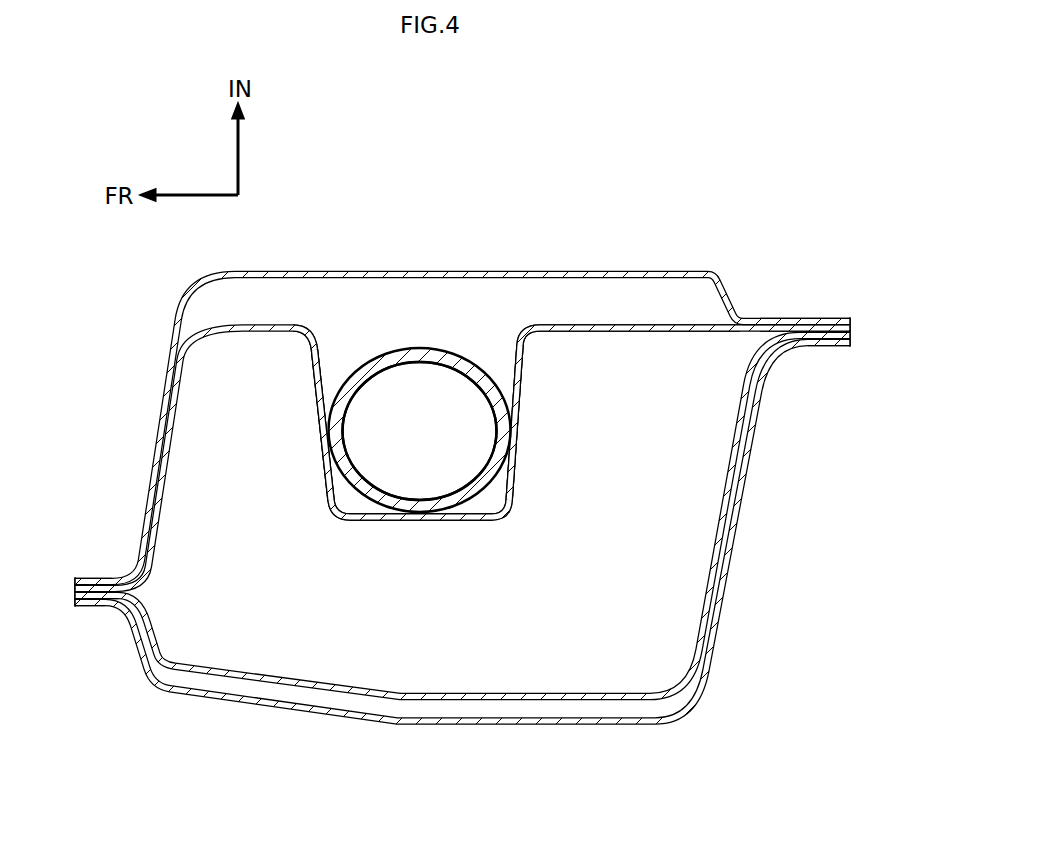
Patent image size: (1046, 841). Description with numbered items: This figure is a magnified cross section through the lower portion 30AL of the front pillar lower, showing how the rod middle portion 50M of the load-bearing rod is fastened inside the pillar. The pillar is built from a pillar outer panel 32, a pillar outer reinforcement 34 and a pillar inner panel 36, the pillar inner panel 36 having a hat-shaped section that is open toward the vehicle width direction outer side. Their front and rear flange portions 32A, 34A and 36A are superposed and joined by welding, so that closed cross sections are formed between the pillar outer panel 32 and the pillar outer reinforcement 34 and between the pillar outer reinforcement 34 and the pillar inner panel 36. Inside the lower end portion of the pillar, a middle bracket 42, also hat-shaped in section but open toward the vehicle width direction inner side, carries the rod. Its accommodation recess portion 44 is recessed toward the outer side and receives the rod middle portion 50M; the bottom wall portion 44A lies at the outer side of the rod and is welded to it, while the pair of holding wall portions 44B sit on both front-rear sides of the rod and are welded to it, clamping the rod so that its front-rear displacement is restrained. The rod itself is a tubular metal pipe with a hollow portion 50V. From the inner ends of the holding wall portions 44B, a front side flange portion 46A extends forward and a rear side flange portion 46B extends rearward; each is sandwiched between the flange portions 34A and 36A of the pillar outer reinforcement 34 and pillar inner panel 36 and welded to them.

The lower portion of the front pillar lower 30AL is at (786, 169).
The pillar outer panel 32 is at (569, 728).
The flange portion of the pillar outer panel 32A is at (110, 606).
The pillar outer reinforcement 34 is at (477, 706).
The flange portion of the pillar outer reinforcement 34A is at (83, 604).
The pillar inner panel 36 is at (664, 270).
The flange portion of the pillar inner panel 36A is at (87, 578).
The middle bracket 42 is at (325, 527).
The accommodation recess portion 44 is at (509, 527).
The bottom wall portion 44A is at (433, 523).
The holding wall portion 44B is at (313, 387).
The front side flange portion 46A is at (102, 587).
The rear side flange portion 46B is at (802, 325).
The rod middle portion 50M is at (435, 348).
The hollow portion 50V is at (392, 384).